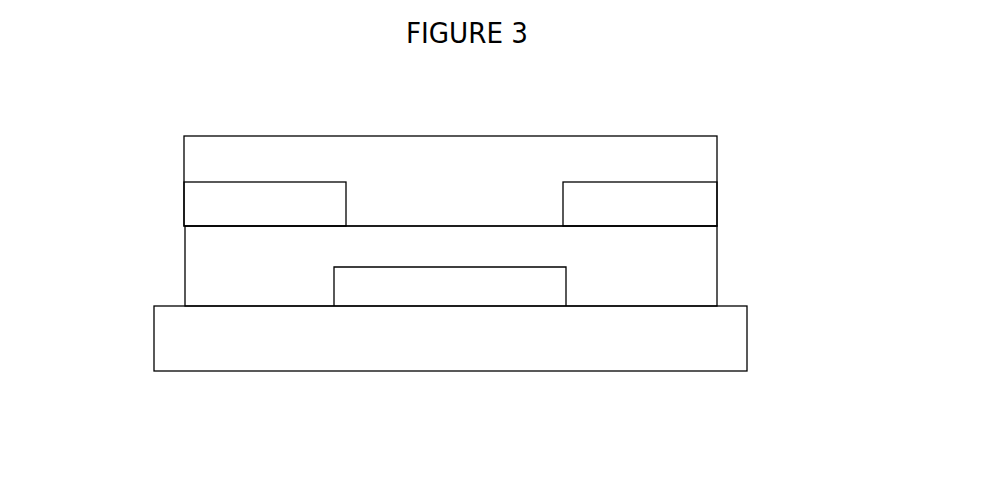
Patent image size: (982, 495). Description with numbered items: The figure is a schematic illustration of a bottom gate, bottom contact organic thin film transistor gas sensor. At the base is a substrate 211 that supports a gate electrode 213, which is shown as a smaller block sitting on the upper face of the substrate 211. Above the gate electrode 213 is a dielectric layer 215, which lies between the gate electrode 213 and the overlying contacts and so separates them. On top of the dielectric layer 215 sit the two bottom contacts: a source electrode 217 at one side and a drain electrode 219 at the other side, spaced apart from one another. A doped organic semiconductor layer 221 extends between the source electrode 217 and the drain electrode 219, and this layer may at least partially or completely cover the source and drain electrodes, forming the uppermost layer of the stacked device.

The substrate 211 is at (746, 334).
The gate electrode 213 is at (539, 308).
The dielectric layer 215 is at (722, 264).
The source electrode 217 is at (183, 201).
The drain electrode 219 is at (722, 208).
The doped organic semiconductor layer 221 is at (722, 163).